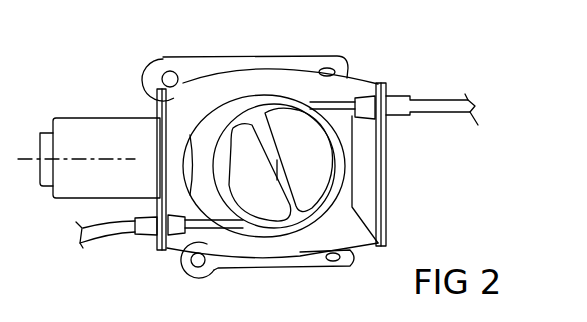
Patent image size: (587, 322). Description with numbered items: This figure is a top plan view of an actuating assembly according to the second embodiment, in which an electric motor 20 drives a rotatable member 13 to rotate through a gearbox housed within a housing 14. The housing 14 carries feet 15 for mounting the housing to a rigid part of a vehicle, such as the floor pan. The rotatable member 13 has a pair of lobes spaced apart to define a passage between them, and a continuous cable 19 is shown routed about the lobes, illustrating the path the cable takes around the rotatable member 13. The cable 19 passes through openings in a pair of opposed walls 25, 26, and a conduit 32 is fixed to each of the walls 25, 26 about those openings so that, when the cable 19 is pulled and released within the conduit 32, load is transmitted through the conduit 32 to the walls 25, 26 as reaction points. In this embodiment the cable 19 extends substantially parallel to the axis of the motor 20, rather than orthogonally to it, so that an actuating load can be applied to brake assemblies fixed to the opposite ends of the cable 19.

The rotatable member 13 is at (338, 190).
The housing 14 is at (290, 78).
The feet 15 is at (222, 55).
The cable 19 is at (208, 225).
The bracket 20 is at (95, 140).
The wall 25 is at (163, 57).
The wall 26 is at (388, 222).
The conduit 32 is at (443, 100).